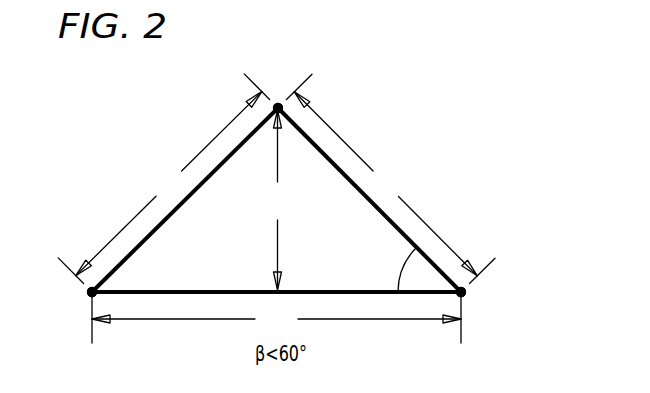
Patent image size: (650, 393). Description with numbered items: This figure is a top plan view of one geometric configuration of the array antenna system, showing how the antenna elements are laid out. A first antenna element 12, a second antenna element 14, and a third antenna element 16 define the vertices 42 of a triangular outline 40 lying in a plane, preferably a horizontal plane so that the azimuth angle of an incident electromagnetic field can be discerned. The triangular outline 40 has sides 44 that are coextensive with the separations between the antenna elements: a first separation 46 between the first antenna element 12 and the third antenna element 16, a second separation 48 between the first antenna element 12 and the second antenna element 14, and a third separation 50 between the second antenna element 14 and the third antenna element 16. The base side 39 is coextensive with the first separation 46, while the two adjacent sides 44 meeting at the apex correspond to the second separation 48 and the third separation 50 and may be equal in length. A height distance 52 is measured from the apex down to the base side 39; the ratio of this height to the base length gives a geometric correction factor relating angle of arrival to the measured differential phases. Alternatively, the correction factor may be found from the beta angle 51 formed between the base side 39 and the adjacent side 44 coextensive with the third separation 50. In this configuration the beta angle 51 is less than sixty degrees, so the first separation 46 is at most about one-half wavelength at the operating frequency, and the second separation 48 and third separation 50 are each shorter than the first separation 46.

The first antenna element 12 is at (90, 292).
The second antenna element 14 is at (280, 105).
The third antenna element 16 is at (463, 292).
The base side 39 is at (178, 291).
The triangular outline 40 is at (420, 163).
The vertices 42 is at (276, 105).
The sides 44 is at (198, 188).
The first separation 46 is at (276, 320).
The second separation 48 is at (169, 184).
The third separation 50 is at (385, 184).
The beta angle 51 is at (398, 291).
The height distance 52 is at (277, 200).